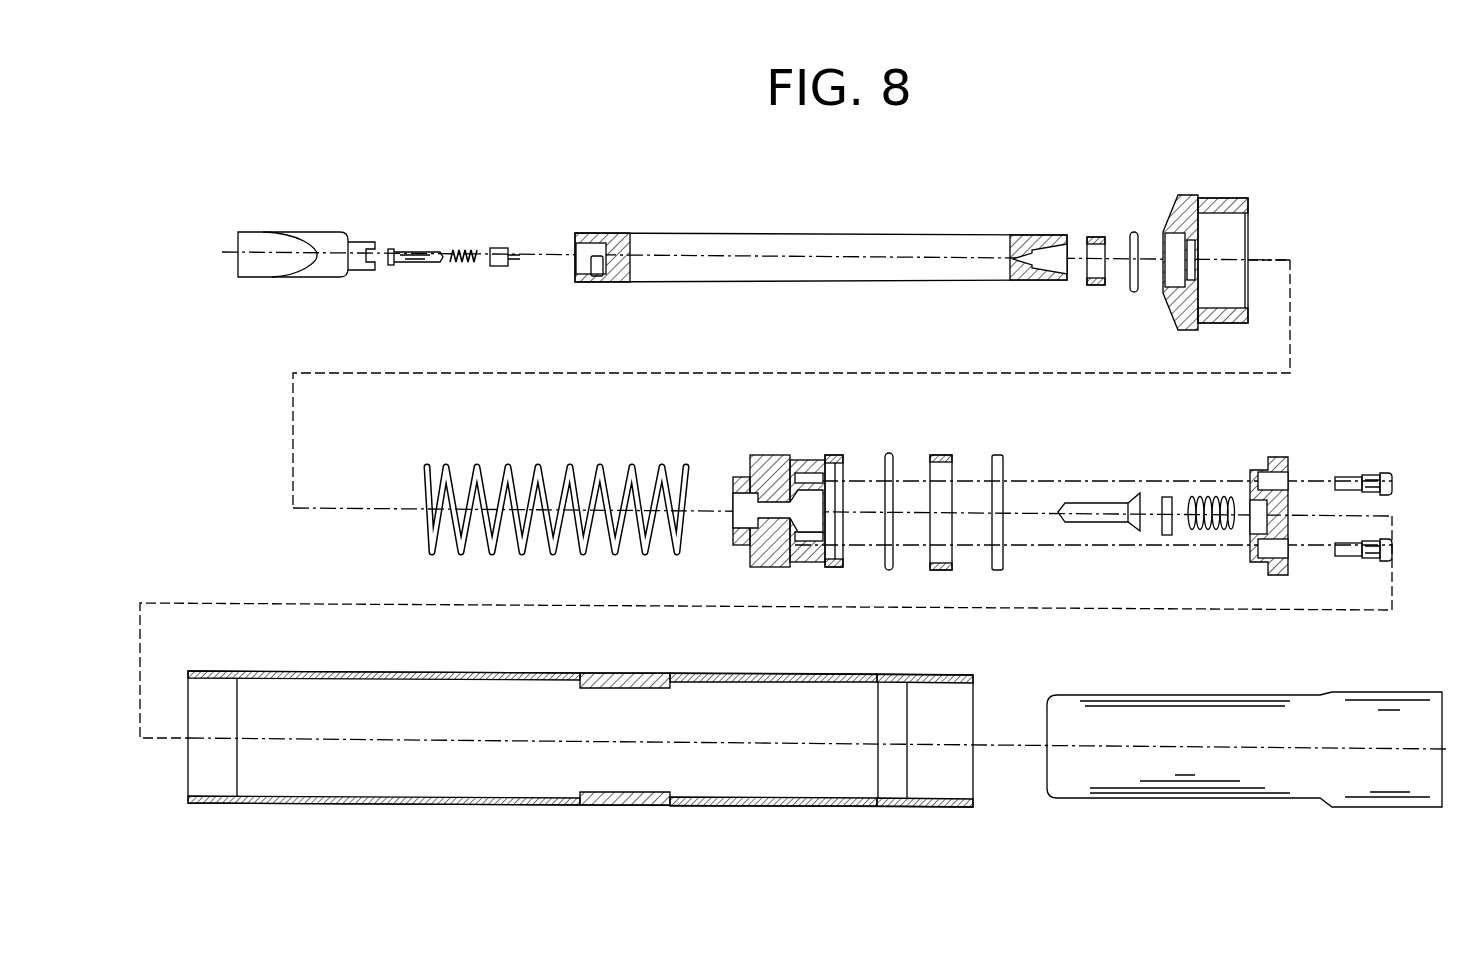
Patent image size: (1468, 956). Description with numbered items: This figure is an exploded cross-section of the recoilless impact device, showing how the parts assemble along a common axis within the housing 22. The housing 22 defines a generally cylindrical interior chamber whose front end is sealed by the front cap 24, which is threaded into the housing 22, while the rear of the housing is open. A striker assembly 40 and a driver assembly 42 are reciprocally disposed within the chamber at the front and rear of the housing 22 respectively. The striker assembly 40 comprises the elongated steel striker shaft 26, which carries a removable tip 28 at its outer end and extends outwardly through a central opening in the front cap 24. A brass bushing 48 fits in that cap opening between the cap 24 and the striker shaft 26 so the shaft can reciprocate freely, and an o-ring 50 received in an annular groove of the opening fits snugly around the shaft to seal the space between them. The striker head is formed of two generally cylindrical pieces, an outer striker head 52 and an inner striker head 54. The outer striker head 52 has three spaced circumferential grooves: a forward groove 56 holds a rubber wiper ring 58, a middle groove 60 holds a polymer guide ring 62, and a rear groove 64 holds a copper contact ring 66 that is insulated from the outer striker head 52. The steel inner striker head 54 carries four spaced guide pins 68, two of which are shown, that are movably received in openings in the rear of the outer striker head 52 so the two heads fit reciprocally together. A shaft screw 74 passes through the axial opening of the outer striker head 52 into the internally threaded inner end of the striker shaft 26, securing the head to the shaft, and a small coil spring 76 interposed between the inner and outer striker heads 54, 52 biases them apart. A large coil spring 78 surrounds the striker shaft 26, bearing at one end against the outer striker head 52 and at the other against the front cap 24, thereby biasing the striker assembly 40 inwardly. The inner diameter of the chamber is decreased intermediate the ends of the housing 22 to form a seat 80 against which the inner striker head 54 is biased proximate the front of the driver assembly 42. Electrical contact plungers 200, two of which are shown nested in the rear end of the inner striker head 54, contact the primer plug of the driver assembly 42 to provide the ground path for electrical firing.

The housing 22 is at (620, 806).
The front cap 24 is at (1178, 208).
The striker shaft 26 is at (923, 237).
The tip 28 is at (303, 232).
The striker assembly 40 is at (556, 190).
The driver assembly 42 is at (1290, 771).
The brass bushing 48 is at (1088, 237).
The o-ring 50 is at (1128, 280).
The outer striker head 52 is at (733, 557).
The inner striker head 54 is at (1284, 457).
The forward groove 56 is at (768, 455).
The rubber wiper ring 58 is at (890, 455).
The middle groove 60 is at (797, 460).
The polymer guide ring 62 is at (945, 455).
The rear groove 64 is at (826, 455).
The copper contact ring 66 is at (1000, 455).
The guide pins 68 is at (1392, 548).
The shaft screw 74 is at (1095, 505).
The small coil spring 76 is at (1205, 500).
The large coil spring 78 is at (502, 478).
The seat 80 is at (578, 793).
The electrical contact plungers 200 is at (1283, 517).